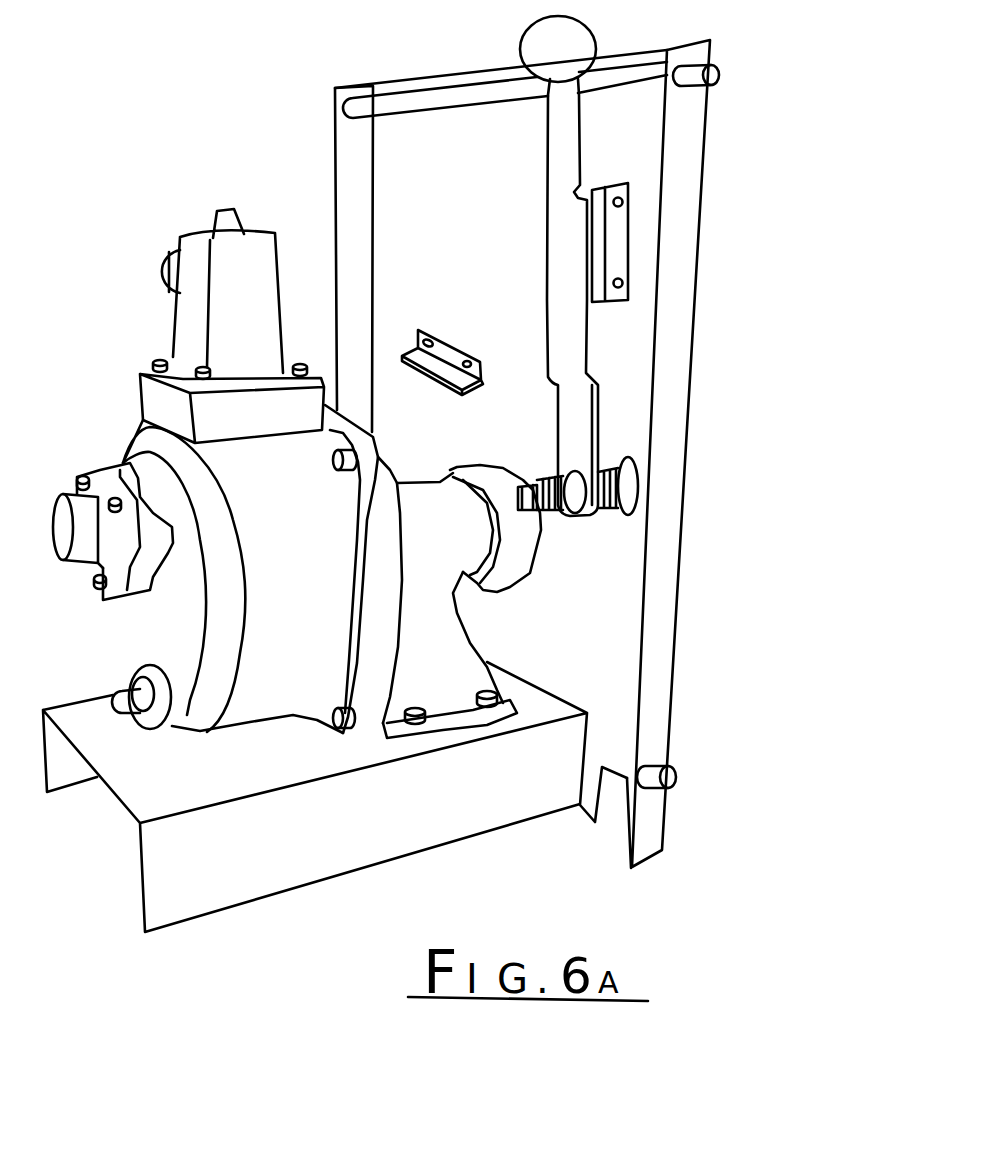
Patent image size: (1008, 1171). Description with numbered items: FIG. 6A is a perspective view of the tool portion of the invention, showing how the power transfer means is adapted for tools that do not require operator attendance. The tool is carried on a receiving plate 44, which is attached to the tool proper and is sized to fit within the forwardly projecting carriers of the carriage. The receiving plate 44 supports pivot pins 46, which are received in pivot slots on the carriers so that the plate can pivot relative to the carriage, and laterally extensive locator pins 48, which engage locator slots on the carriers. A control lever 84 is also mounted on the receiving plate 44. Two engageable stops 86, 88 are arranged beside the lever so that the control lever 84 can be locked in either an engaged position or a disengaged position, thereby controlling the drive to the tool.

The receiving plate 44 is at (605, 577).
The pivot pins 46 is at (718, 68).
The locator pins 48 is at (680, 775).
The control lever 84 is at (565, 143).
The engageable stop 86 is at (602, 260).
The engageable stop 88 is at (447, 368).